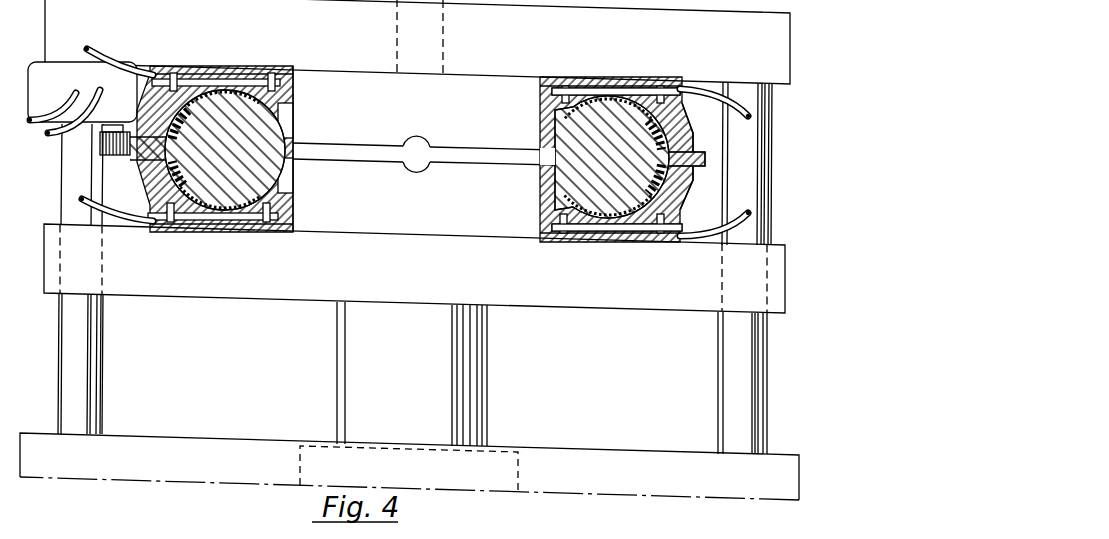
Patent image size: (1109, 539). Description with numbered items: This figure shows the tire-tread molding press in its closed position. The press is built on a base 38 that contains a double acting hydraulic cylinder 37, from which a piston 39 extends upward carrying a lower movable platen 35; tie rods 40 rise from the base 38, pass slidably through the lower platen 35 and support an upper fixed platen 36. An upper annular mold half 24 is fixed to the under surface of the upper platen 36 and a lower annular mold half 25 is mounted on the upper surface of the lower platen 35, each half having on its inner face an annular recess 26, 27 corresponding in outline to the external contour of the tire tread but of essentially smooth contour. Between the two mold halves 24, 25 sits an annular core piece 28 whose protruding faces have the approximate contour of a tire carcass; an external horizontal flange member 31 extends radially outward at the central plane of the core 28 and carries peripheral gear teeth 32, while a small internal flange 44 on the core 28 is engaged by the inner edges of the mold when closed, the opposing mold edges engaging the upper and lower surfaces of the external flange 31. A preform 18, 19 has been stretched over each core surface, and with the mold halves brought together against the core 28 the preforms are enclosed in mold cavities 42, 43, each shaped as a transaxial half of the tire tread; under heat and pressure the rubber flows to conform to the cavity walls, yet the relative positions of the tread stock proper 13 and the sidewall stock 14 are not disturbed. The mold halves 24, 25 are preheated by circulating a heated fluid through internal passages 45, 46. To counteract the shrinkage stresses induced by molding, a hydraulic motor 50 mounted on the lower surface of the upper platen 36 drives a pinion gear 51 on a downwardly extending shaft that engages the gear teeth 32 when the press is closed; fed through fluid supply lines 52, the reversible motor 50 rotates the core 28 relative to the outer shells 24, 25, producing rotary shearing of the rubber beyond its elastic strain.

The tread stock proper 13 is at (664, 238).
The sidewall stock 14 is at (638, 240).
The preform 18 is at (648, 100).
The preform 19 is at (603, 236).
The upper annular mold half 24 is at (300, 70).
The lower annular mold half 25 is at (287, 232).
The annular recess 26 is at (567, 110).
The annular recess 27 is at (568, 236).
The annular core piece 28 is at (288, 116).
The external horizontal flange member 31 is at (701, 156).
The peripheral gear teeth 32 is at (703, 152).
The lower movable platen 35 is at (145, 294).
The upper fixed platen 36 is at (417, 42).
The double acting hydraulic cylinder 37 is at (527, 452).
The base 38 is at (409, 466).
The piston 39 is at (485, 395).
The tie rods 40 is at (100, 386).
The mold cavity 42 is at (237, 95).
The mold cavity 43 is at (236, 213).
The internal flange 44 is at (303, 146).
The internal passage 45 is at (600, 88).
The internal passage 46 is at (592, 238).
The motor 50 is at (82, 92).
The pinion gear 51 is at (104, 148).
The fluid supply lines 52 is at (30, 126).